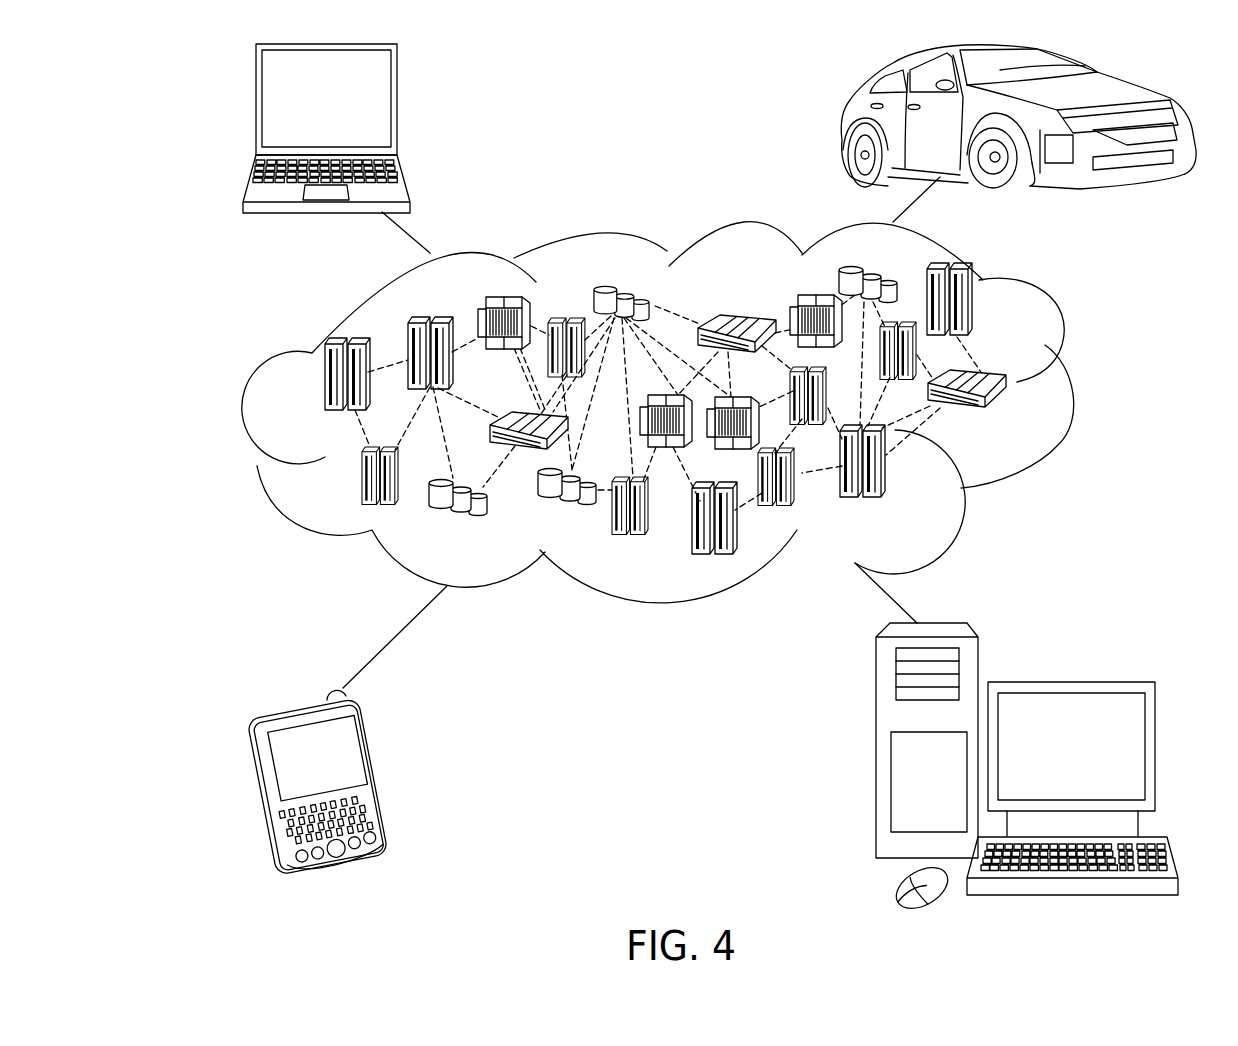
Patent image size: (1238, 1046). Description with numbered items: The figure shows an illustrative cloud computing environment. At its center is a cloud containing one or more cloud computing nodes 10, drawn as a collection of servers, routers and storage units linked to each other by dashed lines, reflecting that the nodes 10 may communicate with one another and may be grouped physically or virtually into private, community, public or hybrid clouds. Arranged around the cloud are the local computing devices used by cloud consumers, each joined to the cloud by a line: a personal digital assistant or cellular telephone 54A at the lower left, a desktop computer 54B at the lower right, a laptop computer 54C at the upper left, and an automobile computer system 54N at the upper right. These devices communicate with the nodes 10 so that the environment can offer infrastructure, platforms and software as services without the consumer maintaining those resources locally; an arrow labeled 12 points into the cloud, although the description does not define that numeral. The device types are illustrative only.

The cloud computing node 10 is at (1068, 382).
The cloud computing nodes 12 is at (1010, 417).
The personal digital assistant or cellular telephone 54A is at (390, 776).
The desktop computer 54B is at (1068, 682).
The laptop computer 54C is at (397, 108).
The automobile computer system 54N is at (852, 123).